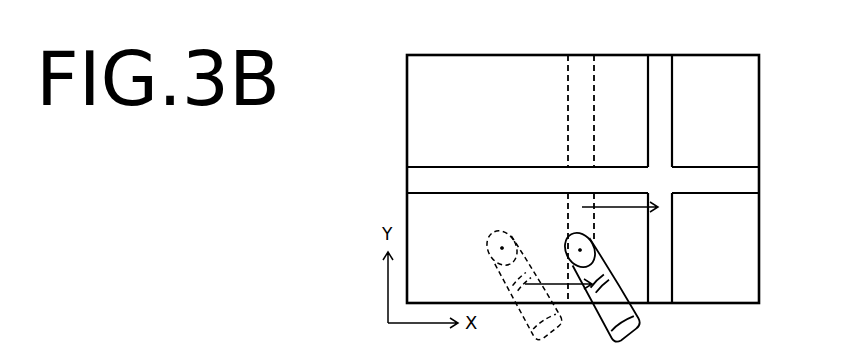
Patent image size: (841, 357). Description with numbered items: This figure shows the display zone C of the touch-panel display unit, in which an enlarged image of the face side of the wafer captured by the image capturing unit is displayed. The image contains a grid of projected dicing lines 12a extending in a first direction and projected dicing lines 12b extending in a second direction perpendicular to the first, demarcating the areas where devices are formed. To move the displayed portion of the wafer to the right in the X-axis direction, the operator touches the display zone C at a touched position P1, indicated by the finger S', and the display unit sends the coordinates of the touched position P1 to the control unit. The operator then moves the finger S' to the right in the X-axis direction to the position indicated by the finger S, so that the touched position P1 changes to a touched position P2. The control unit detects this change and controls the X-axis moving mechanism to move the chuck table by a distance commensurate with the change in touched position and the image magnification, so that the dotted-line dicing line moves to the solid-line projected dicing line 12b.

The display zone C is at (490, 55).
The projected dicing lines 12a is at (483, 165).
The projected dicing lines 12b is at (668, 70).
The touched position P1 is at (500, 248).
The touched position P2 is at (582, 250).
The finger S is at (625, 285).
The finger S' is at (536, 290).